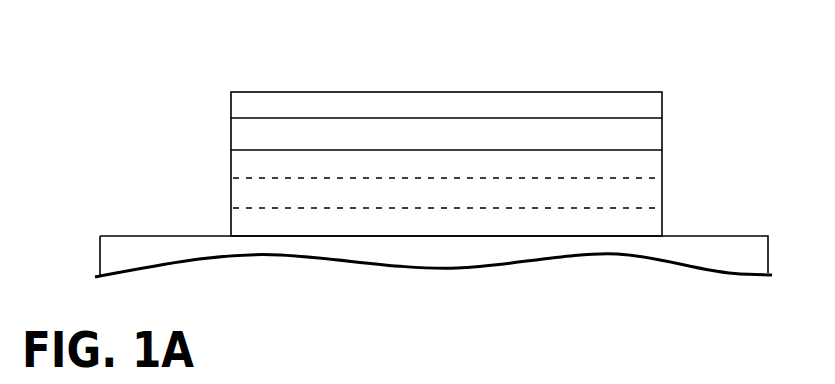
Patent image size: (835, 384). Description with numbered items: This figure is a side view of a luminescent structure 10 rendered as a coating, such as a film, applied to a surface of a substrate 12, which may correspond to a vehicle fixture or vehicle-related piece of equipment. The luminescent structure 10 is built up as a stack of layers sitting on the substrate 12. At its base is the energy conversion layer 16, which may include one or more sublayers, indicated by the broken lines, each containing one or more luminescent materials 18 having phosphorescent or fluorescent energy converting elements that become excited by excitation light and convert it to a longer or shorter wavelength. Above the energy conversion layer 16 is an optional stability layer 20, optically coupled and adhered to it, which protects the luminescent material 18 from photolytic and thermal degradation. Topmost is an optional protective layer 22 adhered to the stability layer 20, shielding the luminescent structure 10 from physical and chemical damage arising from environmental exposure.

The luminescent structure 10 is at (596, 64).
The substrate 12 is at (709, 236).
The energy conversion layer 16 is at (231, 189).
The luminescent material 18 is at (613, 193).
The stability layer 20 is at (231, 134).
The protective layer 22 is at (327, 92).